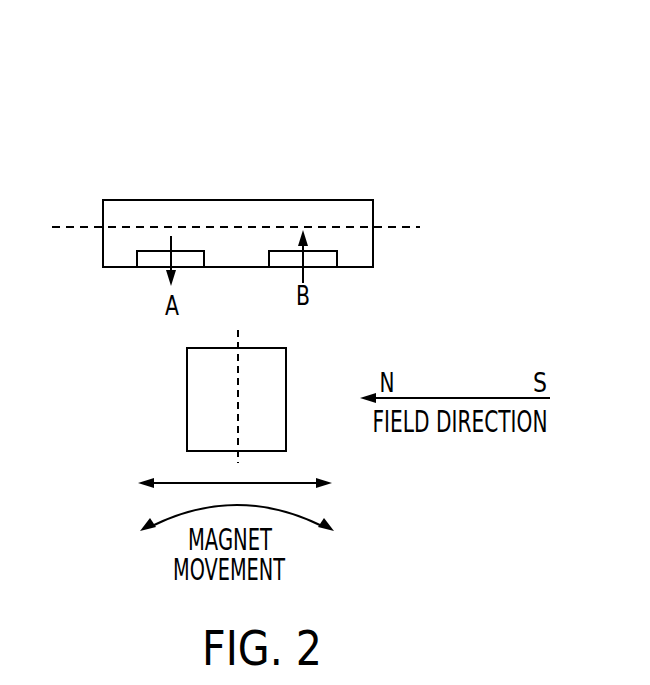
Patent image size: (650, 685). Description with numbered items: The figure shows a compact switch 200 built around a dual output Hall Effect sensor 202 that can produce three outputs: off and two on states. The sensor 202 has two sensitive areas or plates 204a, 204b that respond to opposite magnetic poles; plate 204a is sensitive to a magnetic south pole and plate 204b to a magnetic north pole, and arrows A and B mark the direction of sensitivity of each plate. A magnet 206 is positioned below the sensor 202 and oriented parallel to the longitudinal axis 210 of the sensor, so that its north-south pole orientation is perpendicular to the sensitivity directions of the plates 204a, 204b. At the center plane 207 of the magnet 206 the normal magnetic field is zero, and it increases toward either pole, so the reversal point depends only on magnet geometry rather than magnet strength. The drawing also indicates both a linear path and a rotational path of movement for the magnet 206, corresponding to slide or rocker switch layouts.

The compact switch 200 is at (270, 72).
The dual output Hall Effect sensor 202 is at (144, 207).
The plate 204a is at (146, 262).
The plate 204b is at (327, 258).
The magnet 206 is at (187, 393).
The center plane 207 is at (238, 330).
The longitudinal axis 210 is at (420, 227).